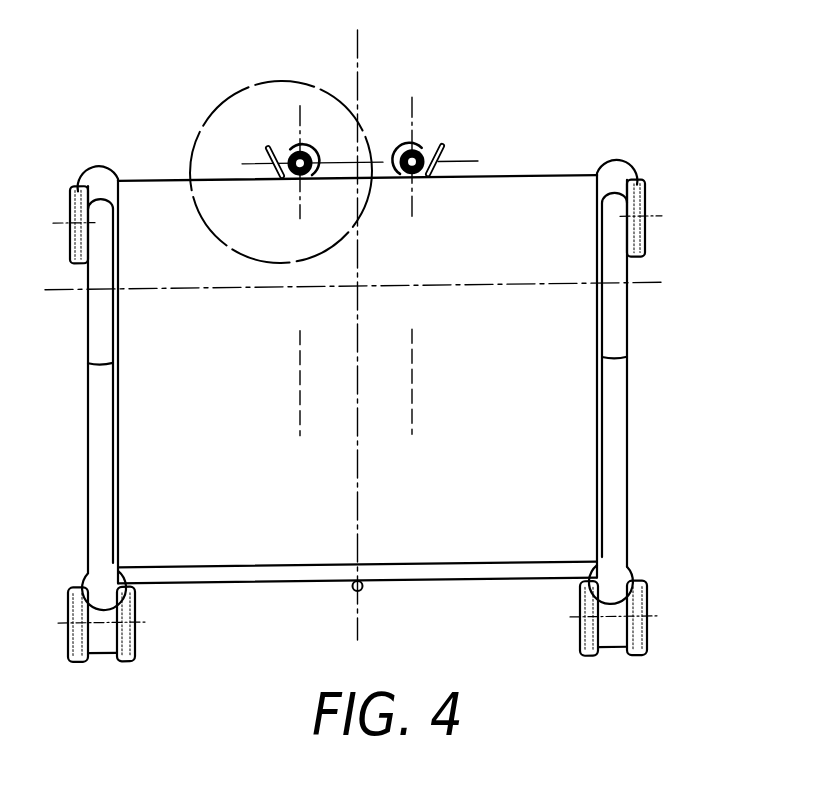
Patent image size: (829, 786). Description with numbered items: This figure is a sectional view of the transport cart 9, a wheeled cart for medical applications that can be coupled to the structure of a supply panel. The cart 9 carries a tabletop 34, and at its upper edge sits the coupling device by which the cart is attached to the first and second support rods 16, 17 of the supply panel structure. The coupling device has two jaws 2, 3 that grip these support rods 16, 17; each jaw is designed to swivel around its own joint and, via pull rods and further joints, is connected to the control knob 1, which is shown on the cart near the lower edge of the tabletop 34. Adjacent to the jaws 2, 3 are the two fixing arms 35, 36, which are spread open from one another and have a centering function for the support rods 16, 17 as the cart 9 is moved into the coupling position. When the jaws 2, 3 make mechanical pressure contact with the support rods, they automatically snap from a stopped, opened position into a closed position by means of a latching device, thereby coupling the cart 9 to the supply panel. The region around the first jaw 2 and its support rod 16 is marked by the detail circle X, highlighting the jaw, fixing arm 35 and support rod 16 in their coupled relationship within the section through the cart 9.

The control knob 1 is at (351, 591).
The first jaw 2 is at (308, 152).
The second jaw 3 is at (406, 150).
The transport cart 9 is at (150, 165).
The first support rod 16 is at (306, 176).
The second support rod 17 is at (422, 178).
The tabletop 34 is at (496, 455).
The first fixing arm 35 is at (265, 158).
The second fixing arm 36 is at (446, 156).
The detail region X is at (242, 88).